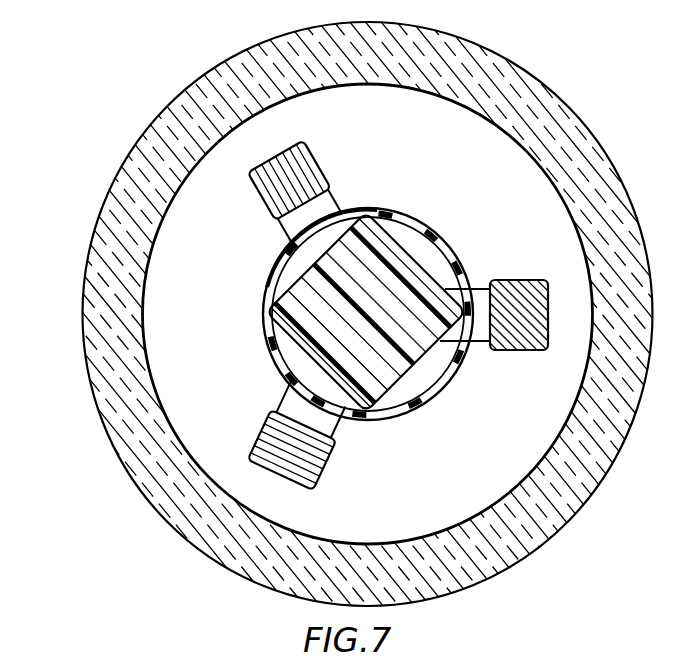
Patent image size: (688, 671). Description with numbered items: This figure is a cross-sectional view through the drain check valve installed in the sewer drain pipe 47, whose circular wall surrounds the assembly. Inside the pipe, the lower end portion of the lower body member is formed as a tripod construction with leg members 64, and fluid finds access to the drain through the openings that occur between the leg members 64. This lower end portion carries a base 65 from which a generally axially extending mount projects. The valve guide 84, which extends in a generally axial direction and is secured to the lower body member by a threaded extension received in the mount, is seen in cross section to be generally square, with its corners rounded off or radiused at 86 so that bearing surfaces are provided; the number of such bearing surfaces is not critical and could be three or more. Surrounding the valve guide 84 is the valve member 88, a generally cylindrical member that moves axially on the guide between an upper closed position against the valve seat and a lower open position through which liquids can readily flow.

The sewer drain pipe 47 is at (93, 301).
The leg members 64 is at (258, 186).
The base 65 is at (479, 292).
The valve guide 84 is at (380, 358).
The rounded corners 86 is at (266, 313).
The valve member 88 is at (266, 278).